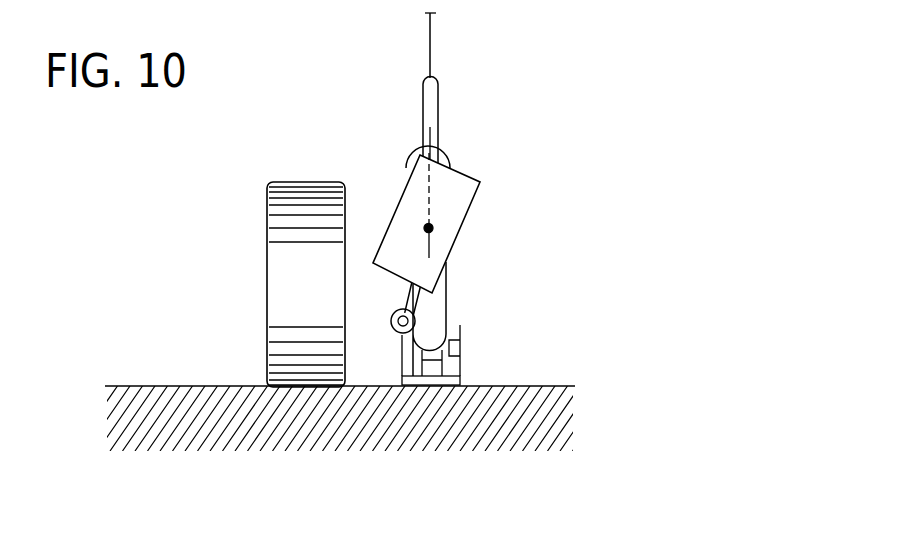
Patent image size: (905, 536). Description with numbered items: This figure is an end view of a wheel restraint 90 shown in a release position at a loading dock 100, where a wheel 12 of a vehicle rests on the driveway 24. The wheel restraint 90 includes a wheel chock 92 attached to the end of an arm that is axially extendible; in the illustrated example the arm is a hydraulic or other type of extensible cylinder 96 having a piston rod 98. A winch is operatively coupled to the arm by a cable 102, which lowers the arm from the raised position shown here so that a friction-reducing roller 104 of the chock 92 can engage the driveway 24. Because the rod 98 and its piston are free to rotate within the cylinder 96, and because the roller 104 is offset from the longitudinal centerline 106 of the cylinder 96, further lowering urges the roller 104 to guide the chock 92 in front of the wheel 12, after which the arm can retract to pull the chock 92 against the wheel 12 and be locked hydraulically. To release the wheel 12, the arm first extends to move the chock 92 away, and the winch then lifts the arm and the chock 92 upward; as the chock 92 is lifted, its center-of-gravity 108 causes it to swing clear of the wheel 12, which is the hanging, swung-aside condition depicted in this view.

The loading dock 100 is at (170, 253).
The wheel 12 is at (297, 182).
The driveway 24 is at (210, 386).
The wheel restraint 90 is at (590, 180).
The cable 102 is at (428, 44).
The piston rod 98 is at (438, 107).
The longitudinal centerline 106 is at (438, 137).
The wheel chock 92 is at (393, 213).
The center-of-gravity 108 is at (436, 233).
The extensible cylinder 96 is at (449, 306).
The roller 104 is at (393, 308).